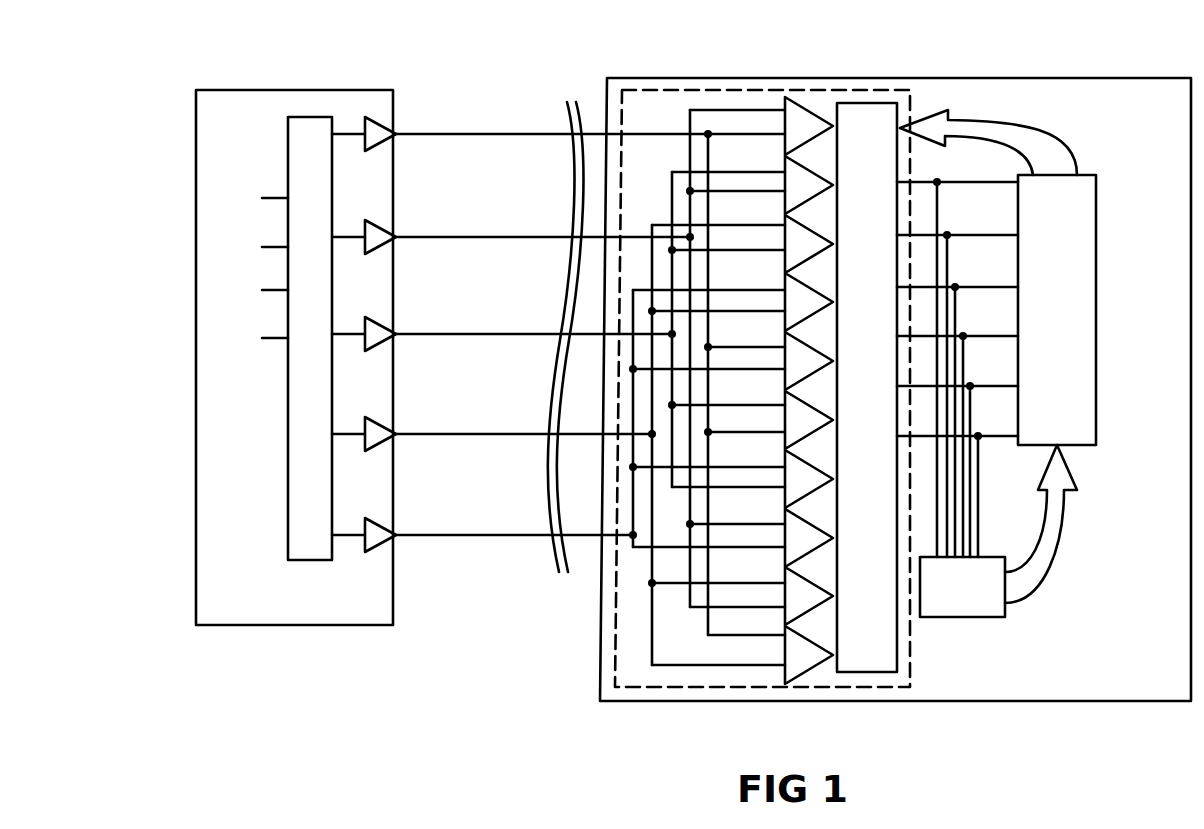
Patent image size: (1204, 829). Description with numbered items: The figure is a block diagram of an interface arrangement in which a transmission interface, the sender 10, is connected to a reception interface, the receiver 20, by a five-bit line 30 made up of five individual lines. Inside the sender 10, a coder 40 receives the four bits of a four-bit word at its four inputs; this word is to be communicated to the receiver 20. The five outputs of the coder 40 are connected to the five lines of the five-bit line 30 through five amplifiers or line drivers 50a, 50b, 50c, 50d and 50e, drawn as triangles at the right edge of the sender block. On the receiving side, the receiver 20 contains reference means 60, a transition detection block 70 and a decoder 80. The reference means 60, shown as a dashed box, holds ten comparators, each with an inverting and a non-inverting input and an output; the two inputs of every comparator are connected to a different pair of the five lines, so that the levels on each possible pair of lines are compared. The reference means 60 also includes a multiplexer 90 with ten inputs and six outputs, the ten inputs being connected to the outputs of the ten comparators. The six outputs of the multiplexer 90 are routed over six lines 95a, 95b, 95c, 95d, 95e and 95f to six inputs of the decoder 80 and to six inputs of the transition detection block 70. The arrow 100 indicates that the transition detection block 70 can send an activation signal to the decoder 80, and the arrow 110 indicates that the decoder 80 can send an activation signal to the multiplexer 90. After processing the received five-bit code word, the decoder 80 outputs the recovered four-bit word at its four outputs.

The sender 10 is at (313, 625).
The receiver 20 is at (785, 701).
The 5-bit line 30 is at (501, 602).
The coder 40 is at (313, 117).
The line driver 50a is at (383, 124).
The line driver 50b is at (383, 227).
The line driver 50c is at (383, 324).
The line driver 50d is at (383, 424).
The line driver 50e is at (383, 525).
The reference means 60 is at (765, 90).
The transition detection block 70 is at (965, 618).
The decoder 80 is at (1098, 197).
The multiplexer 90 is at (872, 102).
The line 95a is at (971, 182).
The line 95b is at (971, 235).
The line 95c is at (971, 287).
The line 95d is at (971, 336).
The line 95e is at (971, 386).
The line 95f is at (973, 436).
The arrow 100 is at (1022, 602).
The arrow 110 is at (1052, 137).